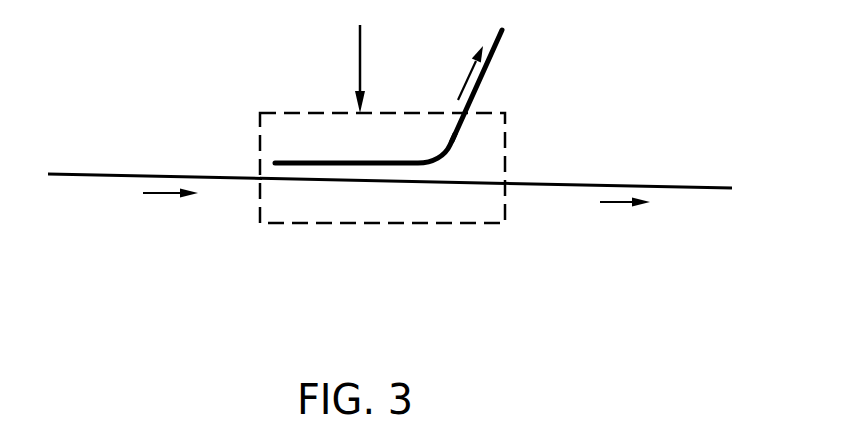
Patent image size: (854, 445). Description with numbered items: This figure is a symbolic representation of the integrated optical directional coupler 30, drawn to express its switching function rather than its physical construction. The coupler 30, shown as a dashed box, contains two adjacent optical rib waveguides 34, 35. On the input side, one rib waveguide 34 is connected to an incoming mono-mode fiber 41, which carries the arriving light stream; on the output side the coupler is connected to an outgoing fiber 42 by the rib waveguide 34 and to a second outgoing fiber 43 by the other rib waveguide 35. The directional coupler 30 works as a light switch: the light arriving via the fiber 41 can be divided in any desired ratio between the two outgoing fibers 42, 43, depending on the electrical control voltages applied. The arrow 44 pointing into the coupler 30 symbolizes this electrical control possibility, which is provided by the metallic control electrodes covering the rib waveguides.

The directional coupler 30 is at (292, 208).
The rib waveguide 34 is at (408, 182).
The rib waveguide 35 is at (297, 162).
The mono-mode fiber 41 is at (80, 175).
The outgoing fiber 42 is at (648, 183).
The outgoing fiber 43 is at (497, 50).
The arrow 44 is at (357, 55).